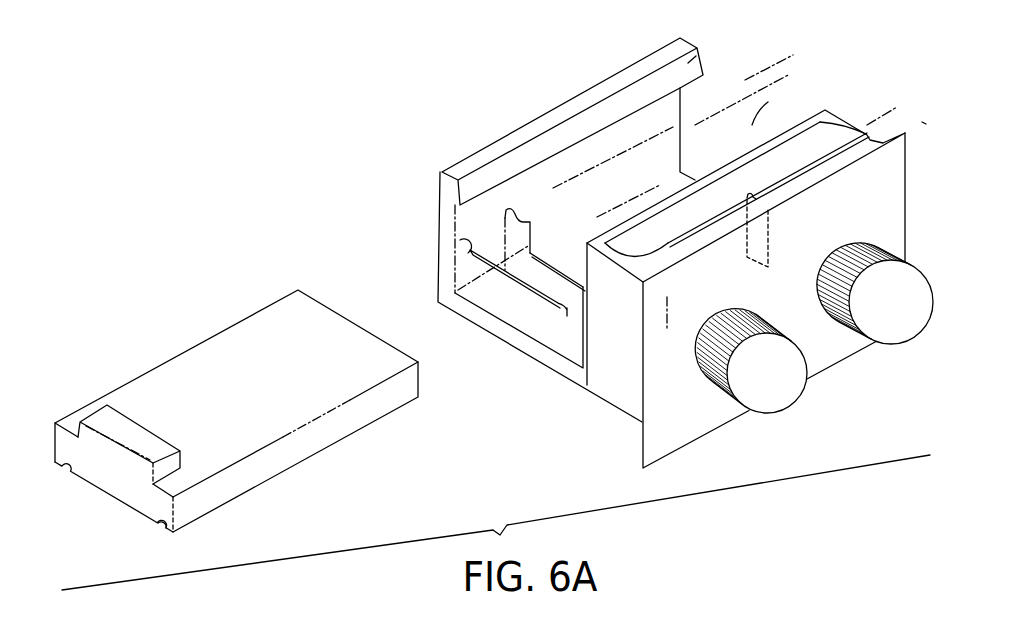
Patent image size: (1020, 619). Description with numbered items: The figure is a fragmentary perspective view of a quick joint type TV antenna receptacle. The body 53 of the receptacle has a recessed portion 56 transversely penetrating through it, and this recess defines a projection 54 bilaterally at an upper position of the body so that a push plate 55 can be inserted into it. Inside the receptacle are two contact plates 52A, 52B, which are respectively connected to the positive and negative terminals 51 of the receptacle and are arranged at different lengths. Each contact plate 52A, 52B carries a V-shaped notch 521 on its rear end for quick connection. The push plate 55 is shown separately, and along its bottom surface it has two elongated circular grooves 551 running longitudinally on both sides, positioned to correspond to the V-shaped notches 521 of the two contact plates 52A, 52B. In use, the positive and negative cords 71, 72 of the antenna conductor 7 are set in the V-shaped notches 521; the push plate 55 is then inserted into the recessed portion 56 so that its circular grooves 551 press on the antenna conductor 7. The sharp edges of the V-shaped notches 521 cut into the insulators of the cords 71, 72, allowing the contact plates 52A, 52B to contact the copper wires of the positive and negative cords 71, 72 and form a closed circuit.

The antenna conductor 7 is at (777, 67).
The terminals 51 is at (814, 348).
The contact plate 52A is at (547, 276).
The contact plate 52B is at (768, 262).
The V-shaped notch 521 is at (510, 214).
The body 53 is at (609, 400).
The projection 54 is at (713, 44).
The push plate 55 is at (257, 500).
The circular groove 551 is at (165, 545).
The recessed portion 56 is at (526, 341).
The positive cord 71 is at (567, 313).
The negative cord 72 is at (461, 247).